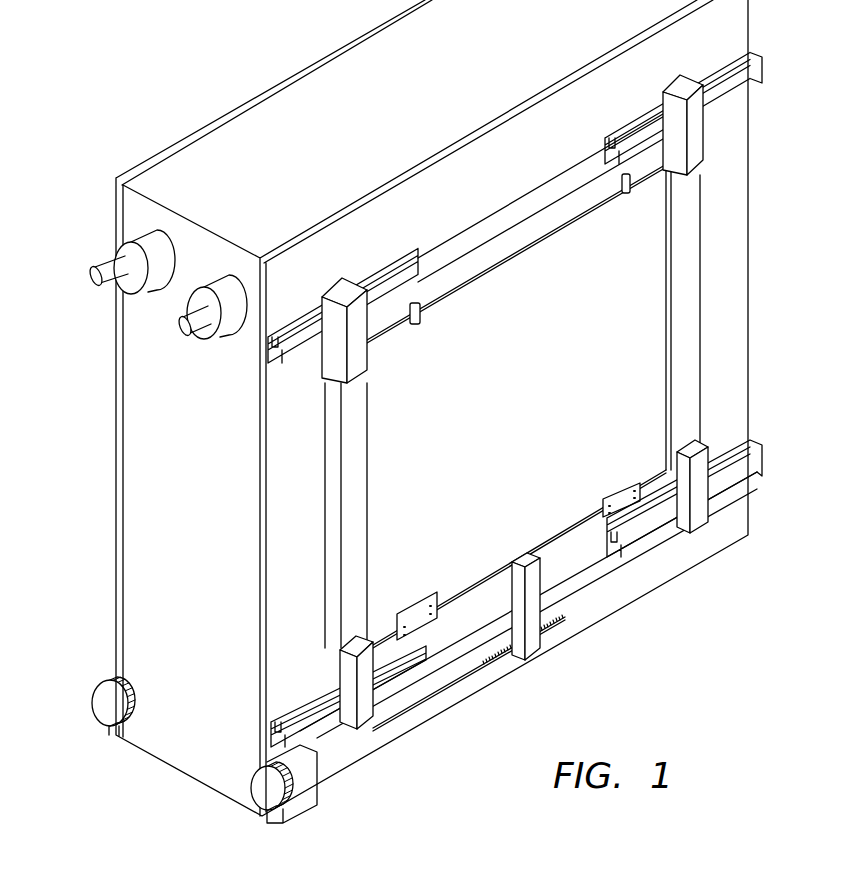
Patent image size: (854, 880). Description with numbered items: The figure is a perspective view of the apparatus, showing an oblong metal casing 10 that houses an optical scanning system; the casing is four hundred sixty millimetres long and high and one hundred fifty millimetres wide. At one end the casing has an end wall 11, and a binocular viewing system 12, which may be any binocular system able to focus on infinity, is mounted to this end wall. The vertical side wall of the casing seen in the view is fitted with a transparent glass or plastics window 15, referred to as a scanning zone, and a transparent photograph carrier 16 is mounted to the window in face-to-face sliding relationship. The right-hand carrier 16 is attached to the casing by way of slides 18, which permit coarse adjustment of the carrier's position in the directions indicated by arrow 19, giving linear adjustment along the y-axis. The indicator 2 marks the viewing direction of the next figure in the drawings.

The oblong metal casing 10 is at (527, 673).
The end wall 11 is at (187, 733).
The binocular viewing system 12 is at (155, 292).
The windows 15 is at (124, 573).
The right-hand carrier 16 is at (565, 450).
The slides 18 is at (752, 68).
The arrow 19 is at (552, 364).
The section line for FIG. 2 is at (78, 433).